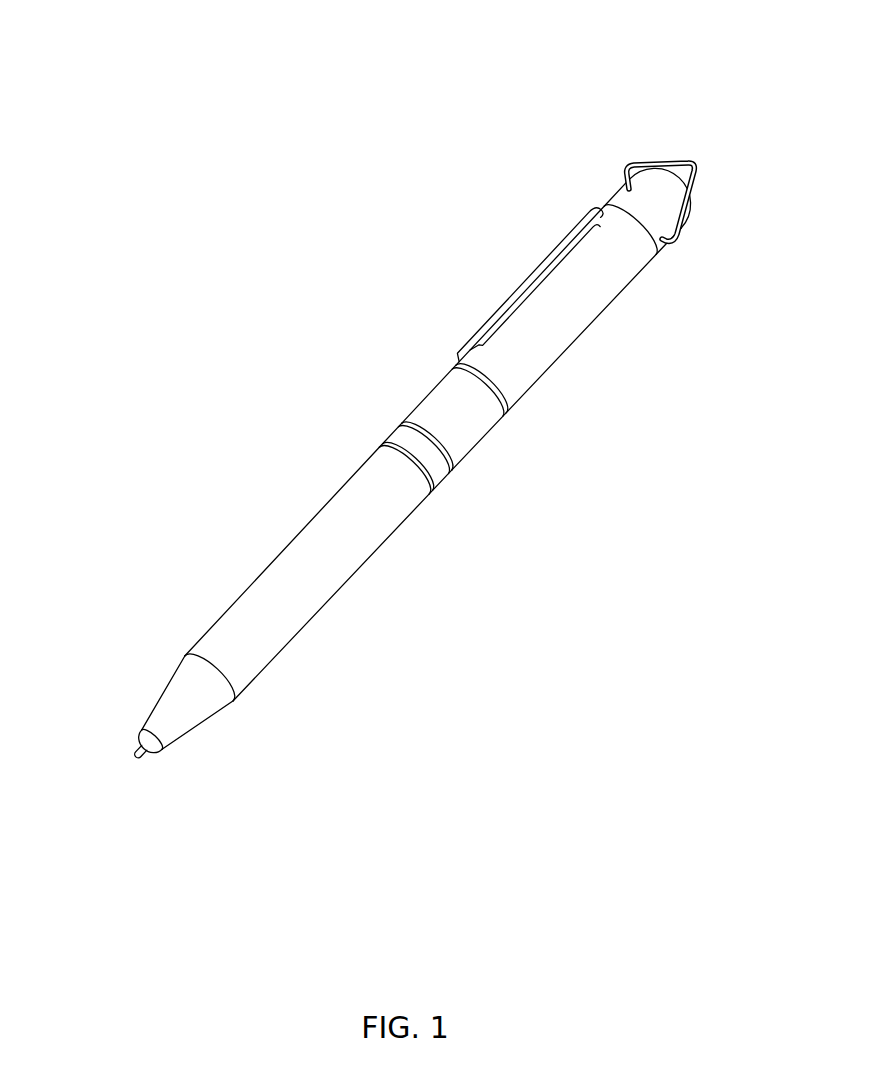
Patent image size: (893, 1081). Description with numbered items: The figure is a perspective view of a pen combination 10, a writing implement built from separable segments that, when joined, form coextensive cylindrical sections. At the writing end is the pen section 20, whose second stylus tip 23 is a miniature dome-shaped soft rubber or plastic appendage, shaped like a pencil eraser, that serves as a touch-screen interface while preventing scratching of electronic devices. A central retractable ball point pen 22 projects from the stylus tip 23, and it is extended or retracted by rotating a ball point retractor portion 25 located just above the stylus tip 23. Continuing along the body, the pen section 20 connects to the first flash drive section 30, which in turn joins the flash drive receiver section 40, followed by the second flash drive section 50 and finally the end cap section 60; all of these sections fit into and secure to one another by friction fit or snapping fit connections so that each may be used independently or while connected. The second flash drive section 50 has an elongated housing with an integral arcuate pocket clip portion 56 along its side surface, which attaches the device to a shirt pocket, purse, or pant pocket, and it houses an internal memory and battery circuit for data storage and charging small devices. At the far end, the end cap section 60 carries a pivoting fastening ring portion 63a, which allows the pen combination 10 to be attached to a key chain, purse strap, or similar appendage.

The pen combination 10 is at (412, 419).
The pen section 20 is at (364, 567).
The ball point pen 22 is at (135, 756).
The second stylus tip 23 is at (140, 735).
The ball point retractor portion 25 is at (170, 677).
The first flash drive section 30 is at (440, 487).
The flash drive receiver section 40 is at (479, 445).
The second flash drive section 50 is at (588, 333).
The pocket clip portion 56 is at (562, 228).
The end cap section 60 is at (665, 250).
The pivoting fastening ring portion 63a is at (700, 163).